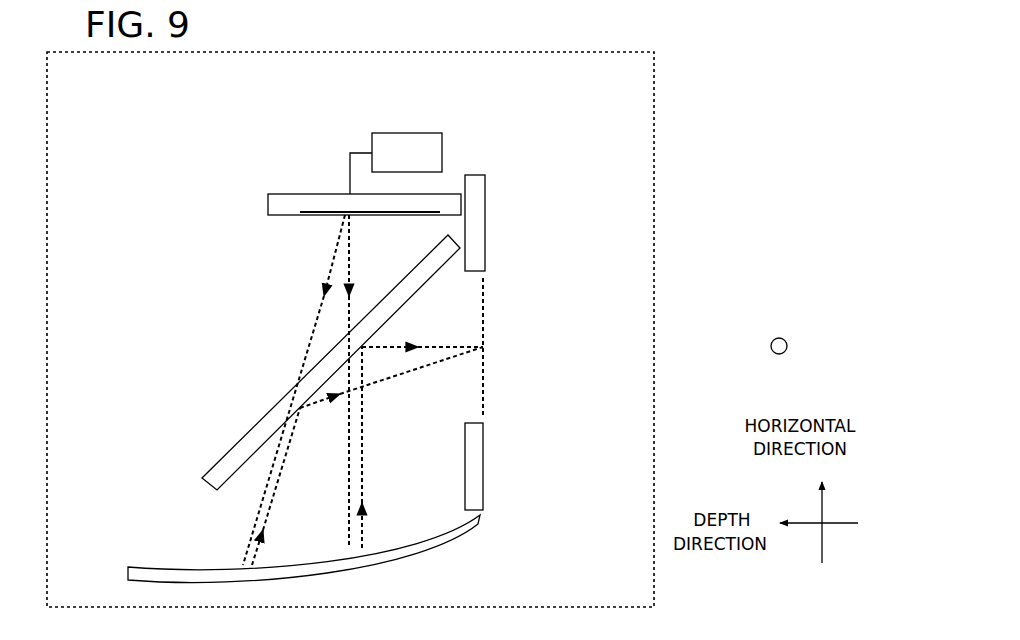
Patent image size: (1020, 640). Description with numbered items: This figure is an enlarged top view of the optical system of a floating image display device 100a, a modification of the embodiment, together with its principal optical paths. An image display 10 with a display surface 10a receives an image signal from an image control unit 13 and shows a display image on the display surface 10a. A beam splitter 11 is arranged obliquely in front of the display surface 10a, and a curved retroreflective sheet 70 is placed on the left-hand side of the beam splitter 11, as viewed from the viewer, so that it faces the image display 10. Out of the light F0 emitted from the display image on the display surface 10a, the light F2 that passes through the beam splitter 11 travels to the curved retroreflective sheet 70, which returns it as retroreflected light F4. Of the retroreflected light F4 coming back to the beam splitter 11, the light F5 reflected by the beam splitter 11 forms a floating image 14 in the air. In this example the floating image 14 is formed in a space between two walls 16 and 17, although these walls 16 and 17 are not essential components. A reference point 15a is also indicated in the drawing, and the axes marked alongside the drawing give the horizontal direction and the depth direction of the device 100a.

The floating image display device 100a is at (655, 155).
The image display 10 is at (303, 195).
The display surface 10a is at (400, 218).
The image control unit 13 is at (385, 133).
The beam splitter 11 is at (270, 412).
The wall 17 is at (486, 196).
The floating image 14 is at (483, 310).
The wall 16 is at (483, 462).
The curved retroreflective sheet 70 is at (158, 568).
The rotation axis 15a is at (773, 340).
The light F0 is at (342, 246).
The light F2 is at (250, 538).
The retroreflected light F4 is at (266, 523).
The light F5 is at (437, 349).